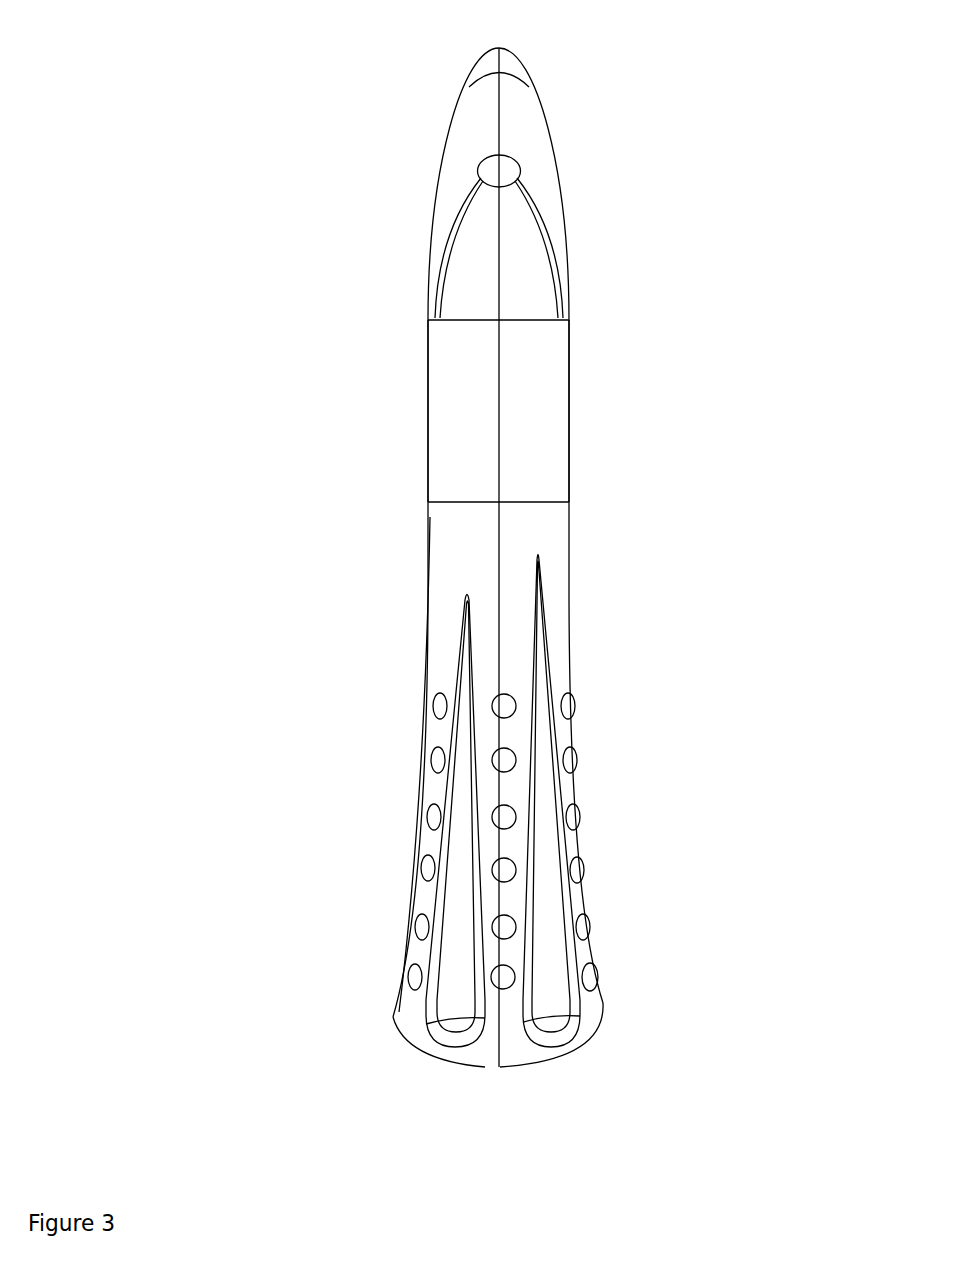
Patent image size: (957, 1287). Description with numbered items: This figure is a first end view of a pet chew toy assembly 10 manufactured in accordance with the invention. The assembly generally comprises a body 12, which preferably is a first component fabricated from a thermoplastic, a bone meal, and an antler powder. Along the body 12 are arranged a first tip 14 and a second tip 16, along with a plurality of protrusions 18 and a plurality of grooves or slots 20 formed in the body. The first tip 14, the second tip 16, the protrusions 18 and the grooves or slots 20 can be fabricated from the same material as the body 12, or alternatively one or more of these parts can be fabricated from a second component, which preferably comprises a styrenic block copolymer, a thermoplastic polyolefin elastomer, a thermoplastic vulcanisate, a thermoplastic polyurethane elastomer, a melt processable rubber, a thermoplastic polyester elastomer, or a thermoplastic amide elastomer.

The pet chew toy assembly 10 is at (717, 107).
The body 12 is at (530, 421).
The first tip 14 is at (488, 172).
The second tip 16 is at (490, 65).
The protrusions 18 is at (430, 815).
The grooves or slots 20 is at (542, 899).